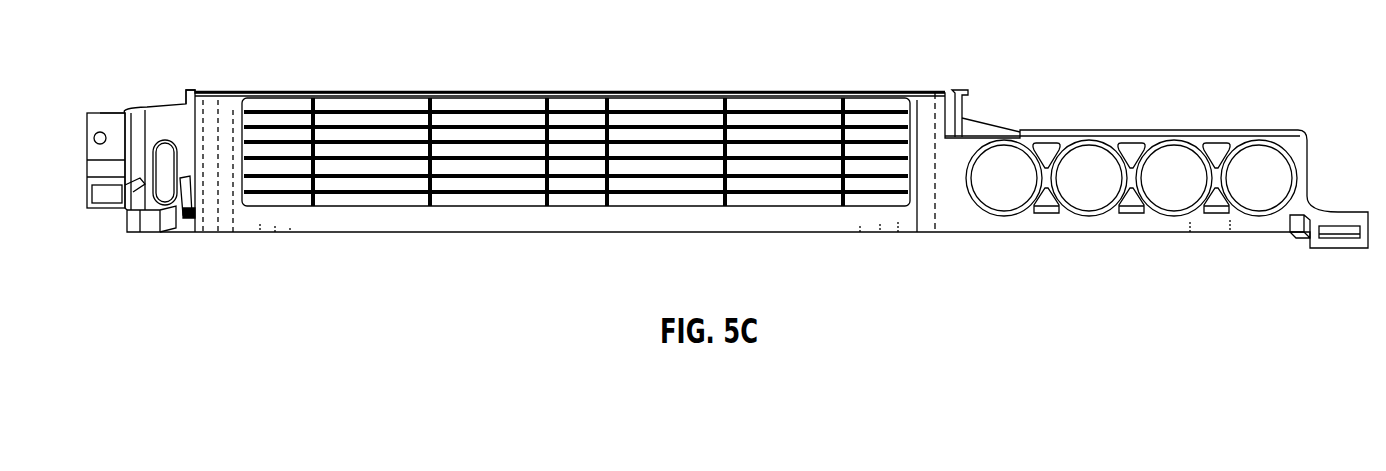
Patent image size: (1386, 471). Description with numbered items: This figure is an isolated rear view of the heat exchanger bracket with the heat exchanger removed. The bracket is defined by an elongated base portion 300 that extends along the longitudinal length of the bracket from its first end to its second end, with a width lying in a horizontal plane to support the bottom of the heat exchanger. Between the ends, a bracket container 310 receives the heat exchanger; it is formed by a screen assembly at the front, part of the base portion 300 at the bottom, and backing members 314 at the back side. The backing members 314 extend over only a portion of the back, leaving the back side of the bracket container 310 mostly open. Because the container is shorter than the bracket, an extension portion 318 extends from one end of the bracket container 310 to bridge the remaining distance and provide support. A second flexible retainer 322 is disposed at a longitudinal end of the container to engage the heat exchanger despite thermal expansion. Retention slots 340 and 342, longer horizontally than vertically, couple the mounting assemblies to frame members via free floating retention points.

The base portion 300 is at (533, 223).
The bracket container 310 is at (510, 76).
The backing members 314 is at (222, 111).
The extension portion 318 is at (1118, 150).
The second flexible retainer 322 is at (192, 215).
The retention slot 340 is at (1338, 243).
The retention slot 342 is at (103, 172).